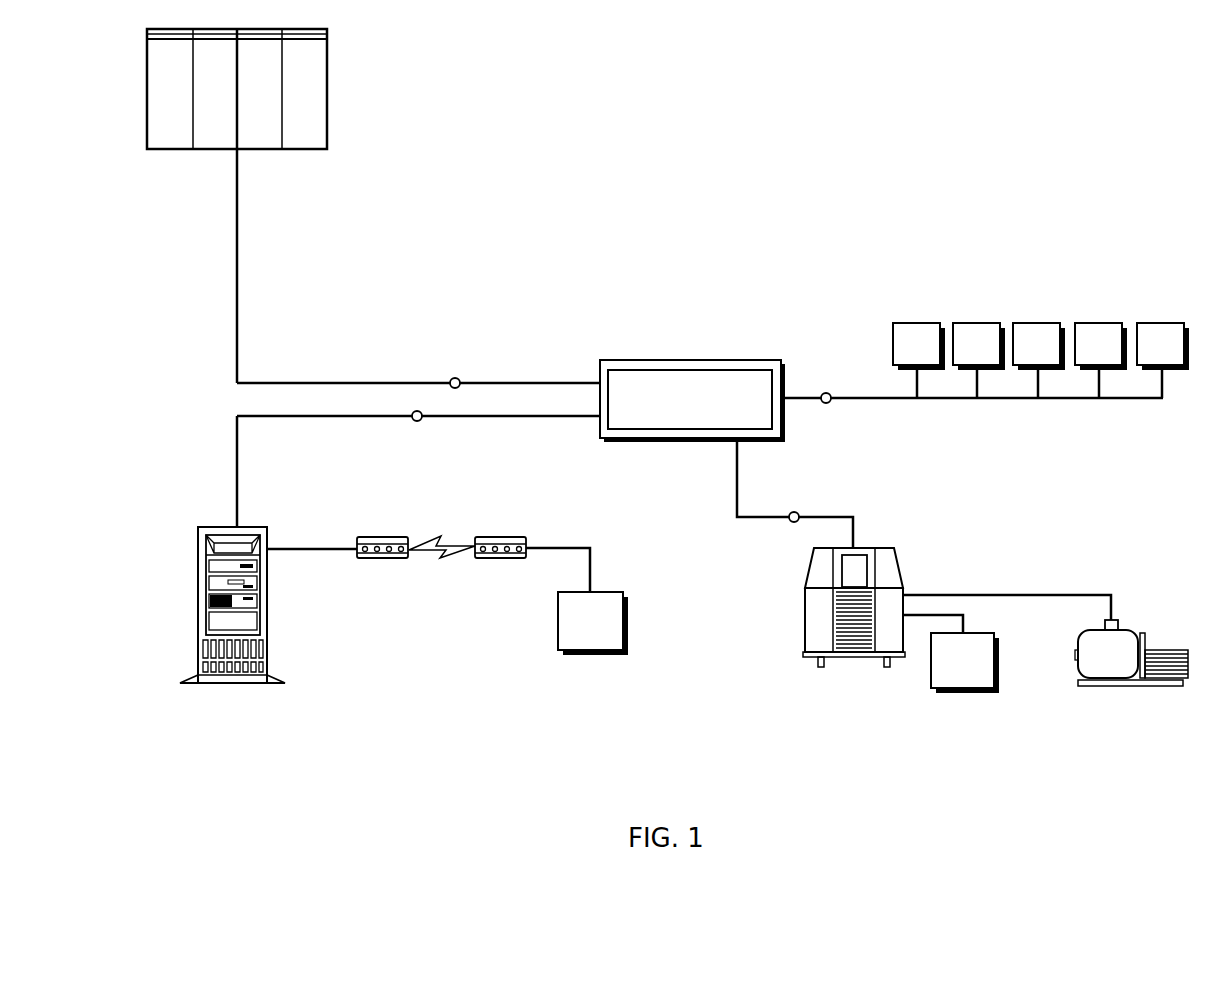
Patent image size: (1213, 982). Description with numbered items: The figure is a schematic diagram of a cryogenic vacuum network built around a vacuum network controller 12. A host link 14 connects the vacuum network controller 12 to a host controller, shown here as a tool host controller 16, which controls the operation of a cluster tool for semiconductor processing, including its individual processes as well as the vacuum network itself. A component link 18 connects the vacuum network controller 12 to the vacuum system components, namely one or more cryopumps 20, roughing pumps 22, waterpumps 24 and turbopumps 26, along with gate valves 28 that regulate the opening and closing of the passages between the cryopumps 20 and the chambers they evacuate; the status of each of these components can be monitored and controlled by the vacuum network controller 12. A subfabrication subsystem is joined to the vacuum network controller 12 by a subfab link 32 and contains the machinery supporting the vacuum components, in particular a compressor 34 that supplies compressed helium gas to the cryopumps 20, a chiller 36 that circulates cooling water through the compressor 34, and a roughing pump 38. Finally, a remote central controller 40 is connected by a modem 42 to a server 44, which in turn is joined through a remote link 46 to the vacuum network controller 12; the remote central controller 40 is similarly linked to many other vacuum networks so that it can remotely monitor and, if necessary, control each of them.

The vacuum network controller 12 is at (704, 411).
The host link 14 is at (455, 377).
The tool host controller 16 is at (330, 83).
The component link 18 is at (826, 392).
The cryopump 20 is at (931, 355).
The roughing pump 22 is at (991, 355).
The waterpump 24 is at (1051, 355).
The turbopump 26 is at (1113, 355).
The gate valve 28 is at (1175, 355).
The subfab link 32 is at (794, 511).
The compressor 34 is at (833, 618).
The chiller 36 is at (976, 671).
The roughing pump 38 is at (1162, 650).
The remote central controller 40 is at (604, 631).
The modem 42 is at (378, 537).
The server 44 is at (248, 683).
The remote link 46 is at (418, 422).